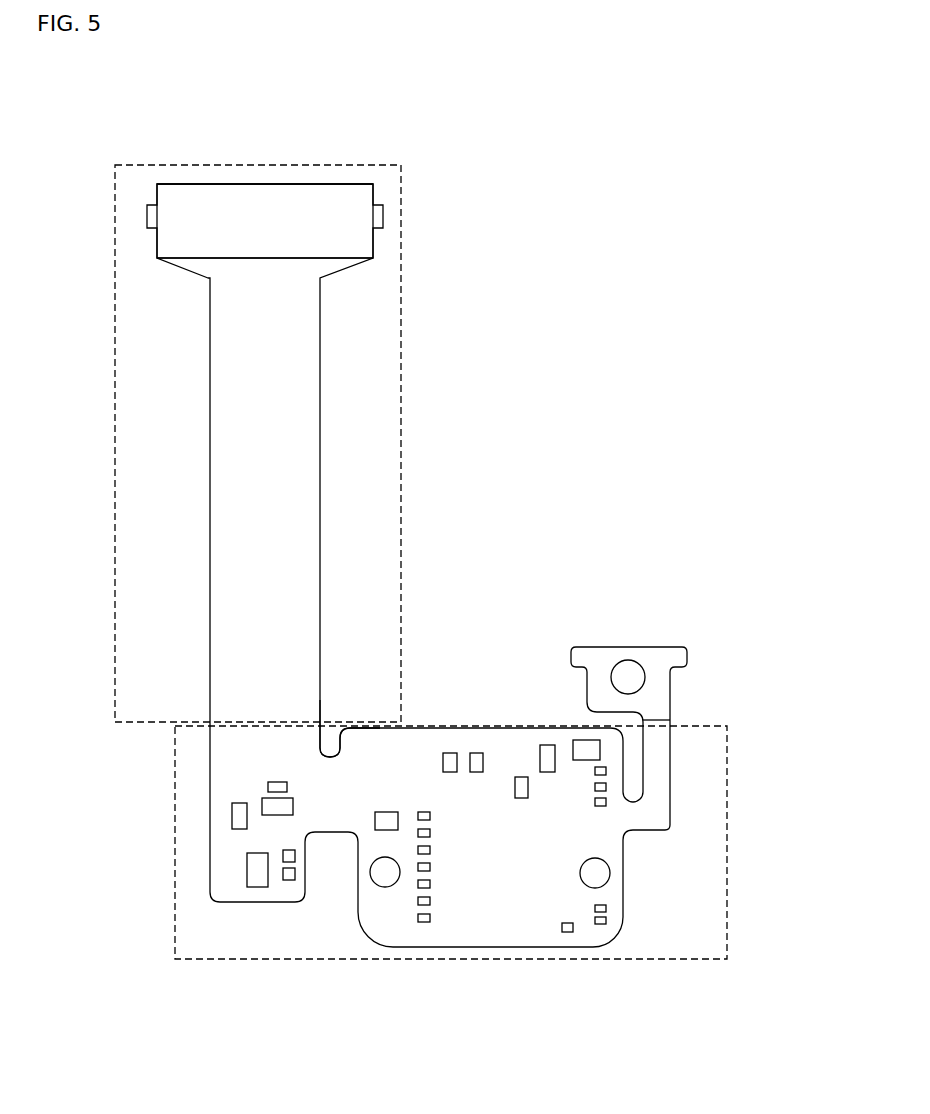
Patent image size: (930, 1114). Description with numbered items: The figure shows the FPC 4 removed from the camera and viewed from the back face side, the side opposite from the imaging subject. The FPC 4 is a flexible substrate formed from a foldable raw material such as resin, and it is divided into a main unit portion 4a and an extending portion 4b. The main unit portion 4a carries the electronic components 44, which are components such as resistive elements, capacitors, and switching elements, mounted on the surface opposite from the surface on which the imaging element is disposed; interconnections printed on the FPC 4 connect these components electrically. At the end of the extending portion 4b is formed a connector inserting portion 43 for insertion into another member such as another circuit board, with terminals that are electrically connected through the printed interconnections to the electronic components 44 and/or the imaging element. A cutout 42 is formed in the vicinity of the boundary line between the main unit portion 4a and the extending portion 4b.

The FPC 4 is at (109, 87).
The main unit portion 4a is at (728, 780).
The extending portion 4b is at (402, 400).
The cutout 42 is at (330, 745).
The connector inserting portion 43 is at (274, 207).
The electronic components 44 is at (601, 926).